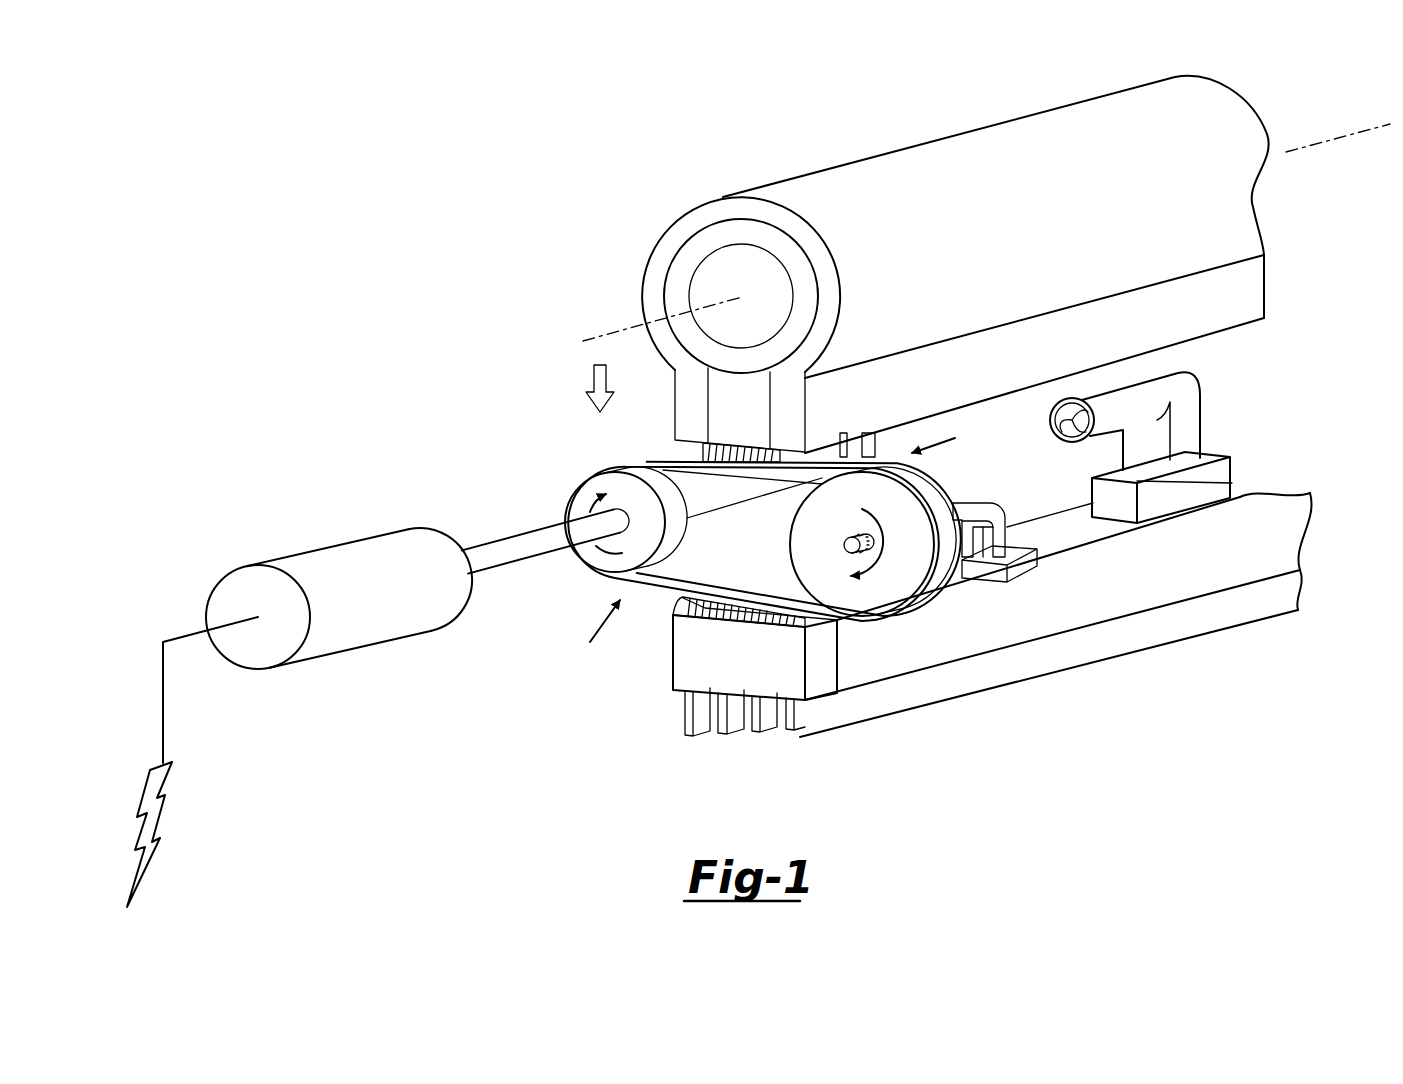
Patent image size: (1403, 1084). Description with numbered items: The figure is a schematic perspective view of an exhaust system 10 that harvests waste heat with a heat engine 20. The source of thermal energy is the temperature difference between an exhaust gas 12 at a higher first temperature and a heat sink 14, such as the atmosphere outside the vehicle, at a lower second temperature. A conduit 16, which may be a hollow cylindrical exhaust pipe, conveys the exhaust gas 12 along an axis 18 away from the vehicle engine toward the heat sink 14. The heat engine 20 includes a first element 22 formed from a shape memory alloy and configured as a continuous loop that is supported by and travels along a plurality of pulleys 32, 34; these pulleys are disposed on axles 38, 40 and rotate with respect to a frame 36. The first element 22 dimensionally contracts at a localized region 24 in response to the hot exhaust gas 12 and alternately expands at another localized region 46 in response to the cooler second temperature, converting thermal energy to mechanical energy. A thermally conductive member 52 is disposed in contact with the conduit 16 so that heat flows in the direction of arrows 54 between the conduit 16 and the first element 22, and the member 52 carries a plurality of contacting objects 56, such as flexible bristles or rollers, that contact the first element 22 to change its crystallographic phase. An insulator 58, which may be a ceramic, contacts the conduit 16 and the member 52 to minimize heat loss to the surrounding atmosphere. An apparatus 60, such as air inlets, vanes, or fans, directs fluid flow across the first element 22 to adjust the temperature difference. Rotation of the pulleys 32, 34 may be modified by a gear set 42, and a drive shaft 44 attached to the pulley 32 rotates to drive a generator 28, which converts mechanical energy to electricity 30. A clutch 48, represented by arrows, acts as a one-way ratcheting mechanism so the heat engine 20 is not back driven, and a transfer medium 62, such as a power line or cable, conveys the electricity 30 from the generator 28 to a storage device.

The exhaust system 10 is at (636, 160).
The exhaust gas 12 is at (757, 272).
The heat sink 14 is at (1032, 625).
The conduit 16 is at (805, 322).
The axis 18 is at (598, 333).
The heat engine 20 is at (591, 635).
The first element 22 is at (648, 462).
The localized region 24 is at (895, 438).
The generator 28 is at (400, 637).
The electricity 30 is at (155, 818).
The pulley 32 is at (575, 480).
The pulley 34 is at (918, 487).
The frame 36 is at (1010, 536).
The axle 38 is at (993, 500).
The axle 40 is at (720, 508).
The gear set 42 is at (844, 547).
The drive shaft 44 is at (480, 525).
The other localized region 46 is at (835, 630).
The clutch 48 is at (575, 520).
The member 52 is at (730, 390).
The arrows 54 is at (590, 375).
The plurality of contacting objects 56 is at (687, 447).
The insulator 58 is at (658, 240).
The apparatus 60 is at (1205, 433).
The transfer medium 62 is at (165, 727).